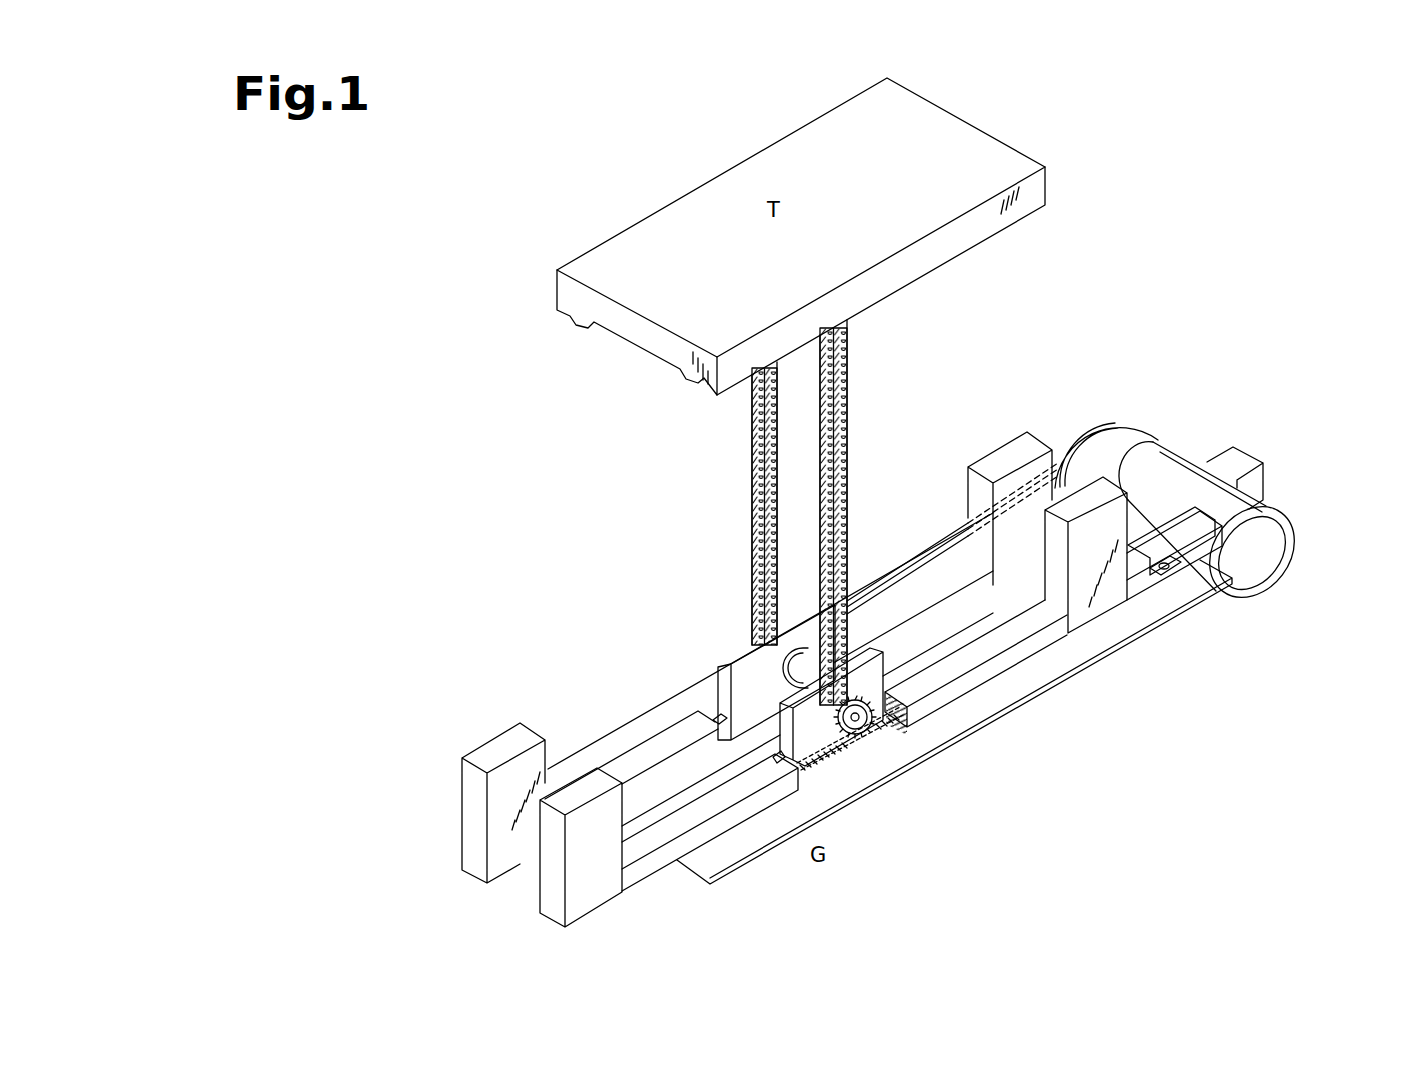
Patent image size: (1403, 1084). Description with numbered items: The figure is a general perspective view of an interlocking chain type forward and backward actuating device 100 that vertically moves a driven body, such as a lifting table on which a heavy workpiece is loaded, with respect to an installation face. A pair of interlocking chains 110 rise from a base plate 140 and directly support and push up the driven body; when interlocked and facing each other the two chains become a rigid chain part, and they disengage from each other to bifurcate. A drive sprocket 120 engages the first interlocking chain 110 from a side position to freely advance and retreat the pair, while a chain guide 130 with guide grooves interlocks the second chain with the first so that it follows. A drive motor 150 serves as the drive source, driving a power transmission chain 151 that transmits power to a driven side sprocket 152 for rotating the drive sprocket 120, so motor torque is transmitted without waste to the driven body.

The interlocking chain type forward and backward actuating device 100 is at (508, 200).
The interlocking chain 110 is at (752, 437).
The drive sprocket 120 is at (862, 722).
The chain guide 130 is at (880, 697).
The base plate 140 is at (960, 722).
The drive motor 150 is at (1258, 566).
The power transmission chain 151 is at (946, 538).
The driven side sprocket 152 is at (728, 666).